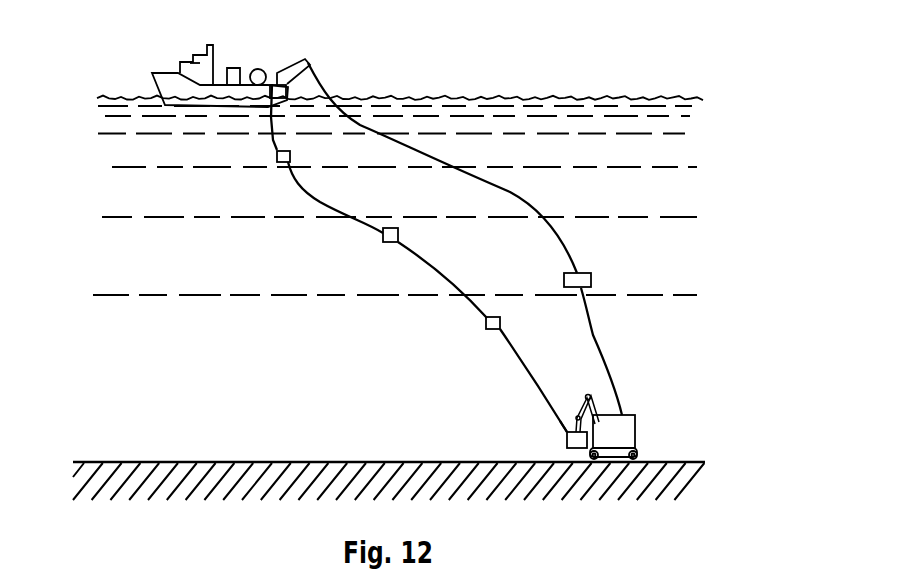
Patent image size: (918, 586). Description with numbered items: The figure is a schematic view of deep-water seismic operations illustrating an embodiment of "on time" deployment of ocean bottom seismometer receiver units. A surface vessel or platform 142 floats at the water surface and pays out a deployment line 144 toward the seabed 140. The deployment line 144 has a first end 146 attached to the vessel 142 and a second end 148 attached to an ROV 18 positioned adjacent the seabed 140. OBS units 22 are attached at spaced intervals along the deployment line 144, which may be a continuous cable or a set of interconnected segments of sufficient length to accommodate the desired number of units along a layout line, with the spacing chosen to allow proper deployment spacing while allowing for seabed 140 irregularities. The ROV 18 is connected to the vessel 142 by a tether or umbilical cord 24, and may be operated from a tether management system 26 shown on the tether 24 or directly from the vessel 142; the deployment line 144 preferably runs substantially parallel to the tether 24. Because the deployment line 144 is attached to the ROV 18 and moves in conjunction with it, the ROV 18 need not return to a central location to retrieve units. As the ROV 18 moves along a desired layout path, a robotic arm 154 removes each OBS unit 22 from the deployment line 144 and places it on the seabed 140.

The ROV 18 is at (635, 430).
The OBS units 22 is at (275, 157).
The tether or umbilical cord 24 is at (513, 192).
The tether management system 26 is at (592, 278).
The seabed 140 is at (460, 460).
The vessel or platform 142 is at (168, 73).
The deployment line 144 is at (302, 183).
The first end 146 is at (273, 76).
The second end 148 is at (565, 427).
The robotic arm 154 is at (587, 395).